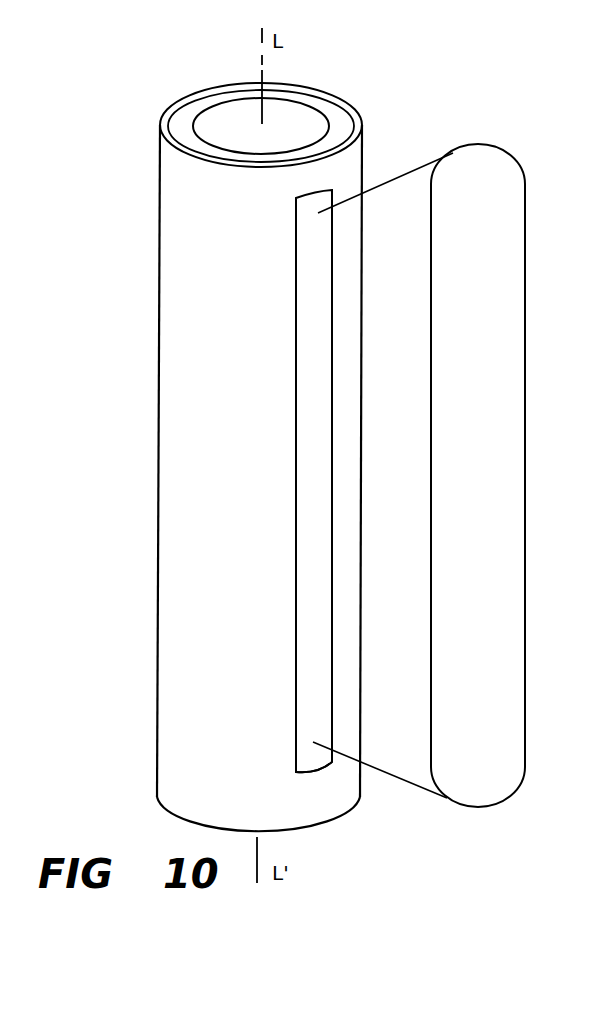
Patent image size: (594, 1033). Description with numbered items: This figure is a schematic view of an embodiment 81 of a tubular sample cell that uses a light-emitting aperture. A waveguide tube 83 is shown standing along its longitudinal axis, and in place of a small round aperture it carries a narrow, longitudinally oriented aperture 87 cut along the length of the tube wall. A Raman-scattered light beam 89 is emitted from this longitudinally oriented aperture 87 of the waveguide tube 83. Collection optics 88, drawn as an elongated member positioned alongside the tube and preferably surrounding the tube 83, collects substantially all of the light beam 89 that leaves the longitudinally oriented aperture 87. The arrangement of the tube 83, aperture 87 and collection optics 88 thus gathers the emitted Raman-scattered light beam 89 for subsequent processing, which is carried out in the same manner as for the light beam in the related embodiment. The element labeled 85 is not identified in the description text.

The embodiment 81 is at (385, 95).
The waveguide tube 83 is at (350, 170).
The inner tube 85 is at (313, 97).
The longitudinally oriented aperture 87 is at (298, 578).
The collection optics 88 is at (482, 598).
The Raman-scattered light beam 89 is at (388, 745).